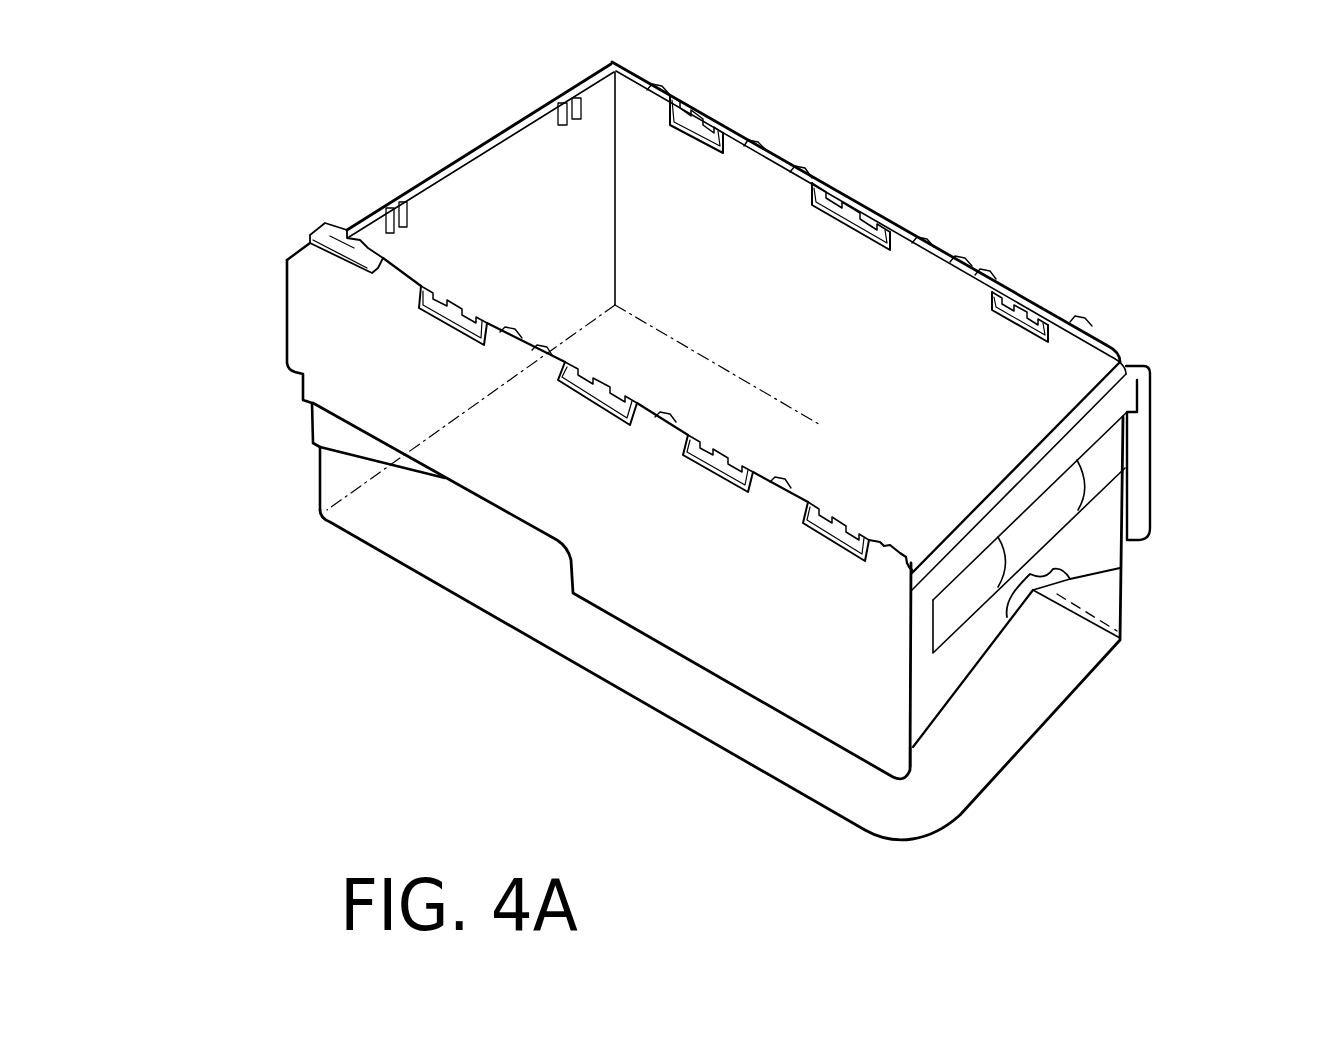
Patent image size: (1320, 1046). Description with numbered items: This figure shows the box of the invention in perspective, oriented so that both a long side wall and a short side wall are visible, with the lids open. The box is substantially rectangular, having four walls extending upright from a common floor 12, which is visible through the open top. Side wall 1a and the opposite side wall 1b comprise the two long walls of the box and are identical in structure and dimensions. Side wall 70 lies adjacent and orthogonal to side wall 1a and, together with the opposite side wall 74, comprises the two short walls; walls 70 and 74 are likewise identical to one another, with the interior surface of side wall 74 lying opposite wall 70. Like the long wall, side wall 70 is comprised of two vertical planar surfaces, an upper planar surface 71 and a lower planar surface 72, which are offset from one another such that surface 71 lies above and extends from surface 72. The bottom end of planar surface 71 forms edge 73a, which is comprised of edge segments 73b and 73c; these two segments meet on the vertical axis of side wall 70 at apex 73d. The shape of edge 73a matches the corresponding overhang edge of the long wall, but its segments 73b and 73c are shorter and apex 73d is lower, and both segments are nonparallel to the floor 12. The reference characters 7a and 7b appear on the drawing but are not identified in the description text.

The side wall 1a is at (303, 428).
The side wall 1b is at (962, 297).
The floor 12 is at (745, 425).
The side wall 74 is at (467, 197).
The front wall panel 7a is at (650, 590).
The handle portion 7b is at (1153, 403).
The side wall 70 is at (1127, 577).
The planar surface 71 is at (923, 707).
The planar surface 72 is at (1003, 723).
The edge 73a is at (1105, 500).
The edge segment 73b is at (1040, 588).
The edge segment 73c is at (997, 643).
The apex 73d is at (1062, 606).